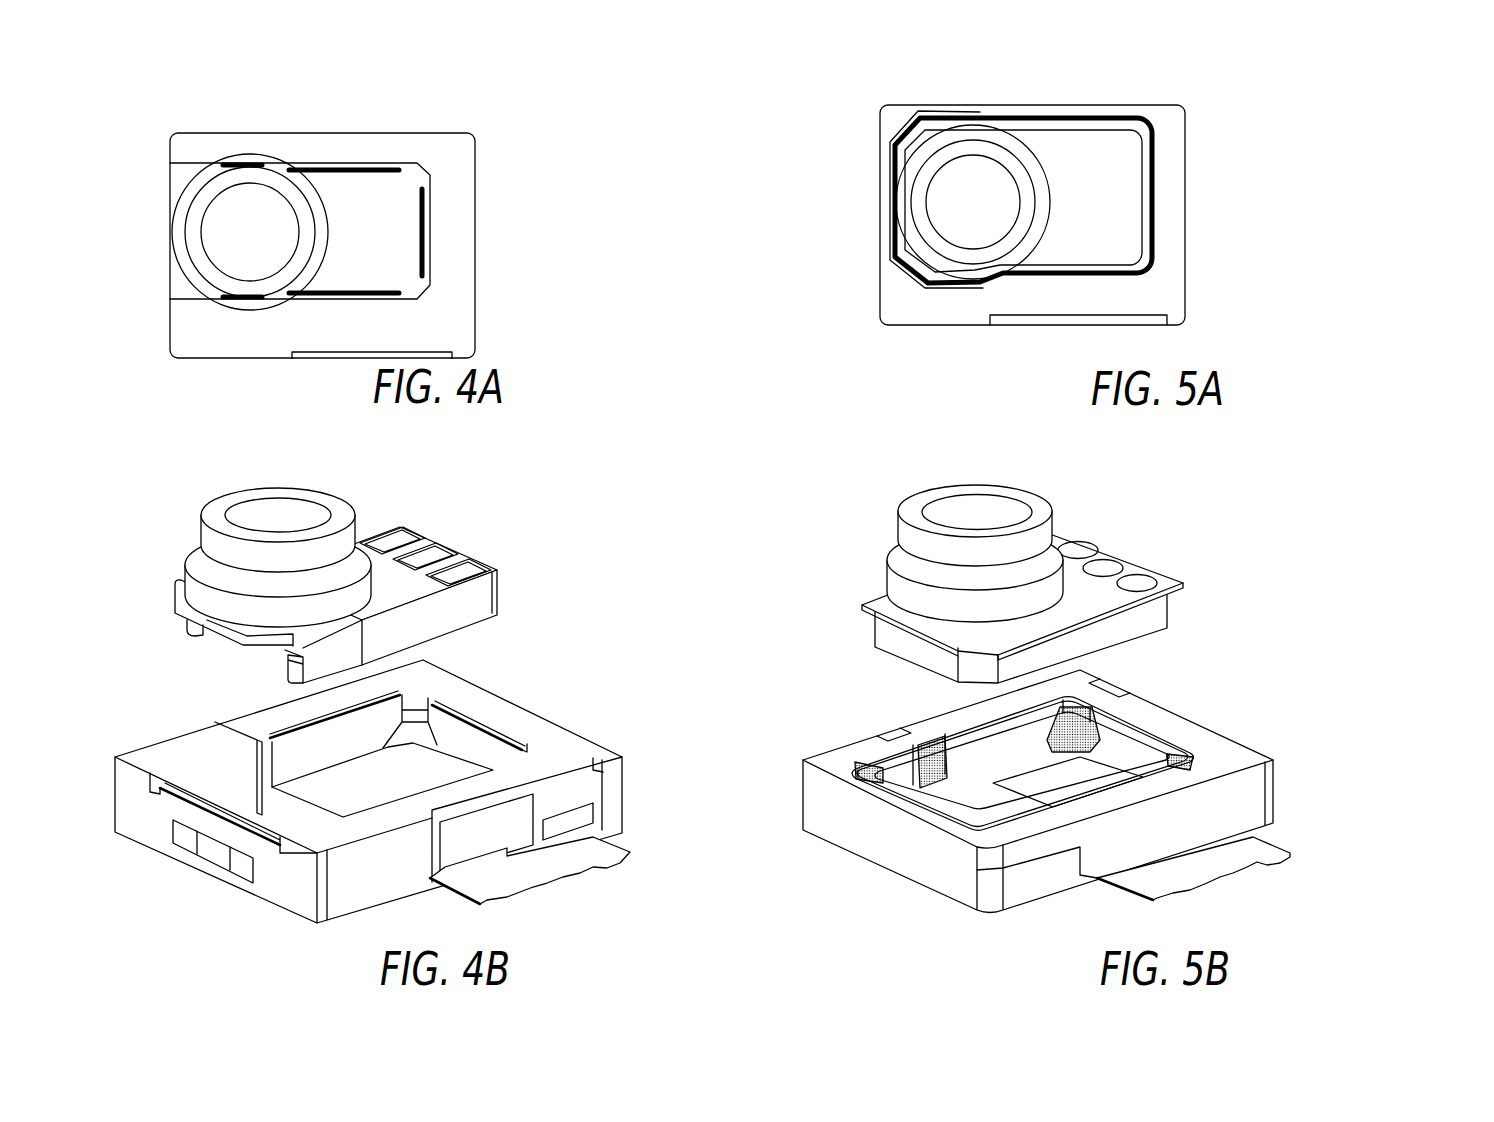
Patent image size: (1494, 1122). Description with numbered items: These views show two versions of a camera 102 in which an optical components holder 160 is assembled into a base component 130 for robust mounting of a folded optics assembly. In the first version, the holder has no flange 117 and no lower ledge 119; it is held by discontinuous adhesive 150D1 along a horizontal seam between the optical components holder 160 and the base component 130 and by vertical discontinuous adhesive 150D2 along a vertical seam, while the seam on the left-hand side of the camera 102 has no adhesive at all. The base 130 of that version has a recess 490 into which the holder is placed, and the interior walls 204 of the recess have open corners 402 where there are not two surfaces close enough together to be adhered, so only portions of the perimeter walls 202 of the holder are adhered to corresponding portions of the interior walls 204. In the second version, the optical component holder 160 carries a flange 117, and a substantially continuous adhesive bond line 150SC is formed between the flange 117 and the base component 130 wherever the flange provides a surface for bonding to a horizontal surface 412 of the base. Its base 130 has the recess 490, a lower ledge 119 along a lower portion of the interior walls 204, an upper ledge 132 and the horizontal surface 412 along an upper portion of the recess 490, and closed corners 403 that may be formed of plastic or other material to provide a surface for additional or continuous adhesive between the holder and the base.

In FIG. 4A, the camera 102 is at (466, 213).
In FIG. 5A, the camera 102 is at (1139, 235).
In FIG. 4A, the base component 130 is at (462, 300).
In FIG. 5A, the base component 130 is at (1178, 280).
In FIG. 4B, the base component 130 is at (402, 789).
In FIG. 5B, the base component 130 is at (1053, 809).
In FIG. 4A, the optical components holder 160 is at (405, 183).
In FIG. 5A, the optical components holder 160 is at (1103, 162).
In FIG. 4B, the optical components holder 160 is at (433, 575).
In FIG. 5B, the optical components holder 160 is at (1108, 575).
In FIG. 4A, the discontinuous adhesive 150D1 is at (323, 168).
In FIG. 4A, the vertical discontinuous adhesive 150D2 is at (425, 222).
In FIG. 5A, the substantially continuous adhesive bond line 150SC is at (1120, 201).
In FIG. 5A, the flange 117 is at (924, 266).
In FIG. 5B, the flange 117 is at (1172, 568).
In FIG. 4B, the perimeter walls 202 is at (382, 563).
In FIG. 5B, the perimeter walls 202 is at (1157, 613).
In FIG. 4B, the interior walls 204 is at (307, 745).
In FIG. 5B, the interior walls 204 is at (970, 757).
In FIG. 4B, the open corners 402 is at (522, 691).
In FIG. 4B, the recess 490 is at (327, 797).
In FIG. 5B, the recess 490 is at (1007, 810).
In FIG. 5B, the upper ledge 132 is at (830, 758).
In FIG. 5B, the lower ledge 119 is at (987, 770).
In FIG. 5B, the horizontal surface 412 is at (1125, 725).
In FIG. 5B, the closed corners 403 is at (1090, 737).